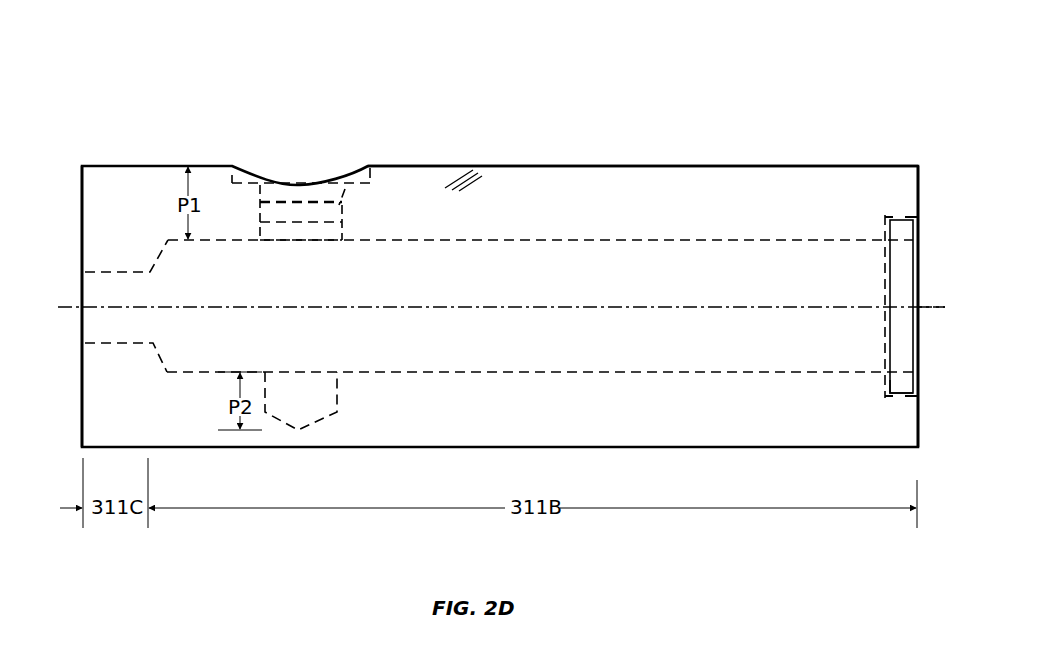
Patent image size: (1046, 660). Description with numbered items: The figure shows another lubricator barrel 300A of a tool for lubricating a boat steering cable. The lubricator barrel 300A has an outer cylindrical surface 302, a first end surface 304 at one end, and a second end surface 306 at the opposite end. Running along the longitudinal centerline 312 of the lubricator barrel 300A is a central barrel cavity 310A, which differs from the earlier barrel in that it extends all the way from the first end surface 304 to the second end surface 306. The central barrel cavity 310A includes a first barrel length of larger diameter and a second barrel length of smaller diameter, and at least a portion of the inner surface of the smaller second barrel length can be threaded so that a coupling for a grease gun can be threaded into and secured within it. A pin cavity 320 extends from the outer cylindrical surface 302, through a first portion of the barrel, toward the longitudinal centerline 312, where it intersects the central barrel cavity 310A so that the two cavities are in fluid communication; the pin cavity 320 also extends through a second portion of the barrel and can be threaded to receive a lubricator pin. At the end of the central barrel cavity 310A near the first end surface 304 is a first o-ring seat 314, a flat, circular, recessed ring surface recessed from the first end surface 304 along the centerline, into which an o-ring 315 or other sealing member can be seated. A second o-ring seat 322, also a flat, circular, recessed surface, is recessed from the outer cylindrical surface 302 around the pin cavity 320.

The lubricator barrel 300A is at (117, 73).
The outer cylindrical surface 302 is at (462, 166).
The first end surface 304 is at (919, 169).
The second end surface 306 is at (83, 166).
The central barrel cavity 310A is at (600, 257).
The longitudinal centerline 312 is at (933, 302).
The first o-ring seat 314 is at (888, 215).
The o-ring 315 is at (893, 385).
The pin cavity 320 is at (304, 182).
The second o-ring seat 322 is at (258, 180).